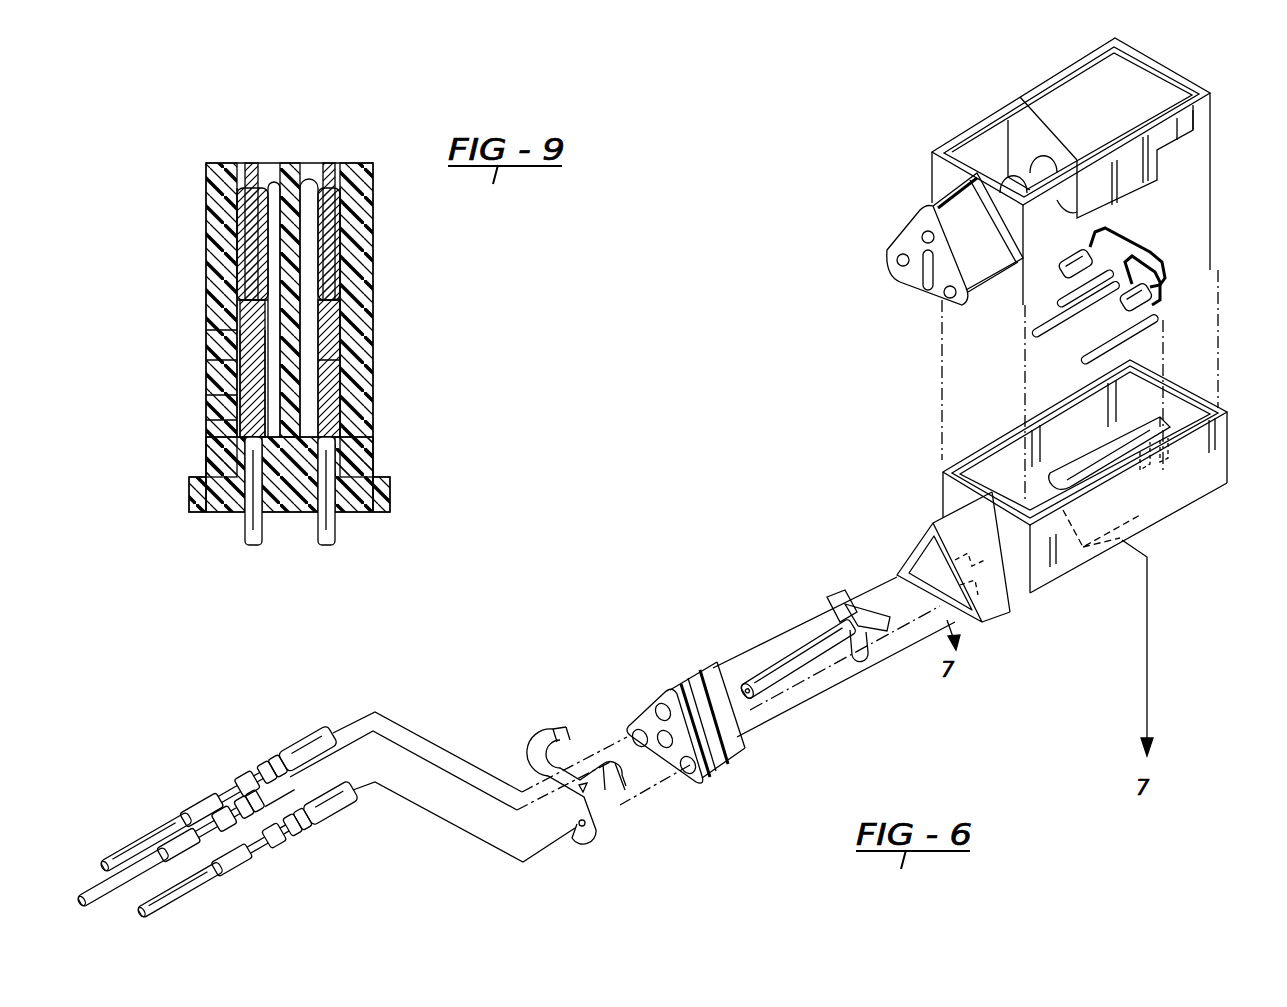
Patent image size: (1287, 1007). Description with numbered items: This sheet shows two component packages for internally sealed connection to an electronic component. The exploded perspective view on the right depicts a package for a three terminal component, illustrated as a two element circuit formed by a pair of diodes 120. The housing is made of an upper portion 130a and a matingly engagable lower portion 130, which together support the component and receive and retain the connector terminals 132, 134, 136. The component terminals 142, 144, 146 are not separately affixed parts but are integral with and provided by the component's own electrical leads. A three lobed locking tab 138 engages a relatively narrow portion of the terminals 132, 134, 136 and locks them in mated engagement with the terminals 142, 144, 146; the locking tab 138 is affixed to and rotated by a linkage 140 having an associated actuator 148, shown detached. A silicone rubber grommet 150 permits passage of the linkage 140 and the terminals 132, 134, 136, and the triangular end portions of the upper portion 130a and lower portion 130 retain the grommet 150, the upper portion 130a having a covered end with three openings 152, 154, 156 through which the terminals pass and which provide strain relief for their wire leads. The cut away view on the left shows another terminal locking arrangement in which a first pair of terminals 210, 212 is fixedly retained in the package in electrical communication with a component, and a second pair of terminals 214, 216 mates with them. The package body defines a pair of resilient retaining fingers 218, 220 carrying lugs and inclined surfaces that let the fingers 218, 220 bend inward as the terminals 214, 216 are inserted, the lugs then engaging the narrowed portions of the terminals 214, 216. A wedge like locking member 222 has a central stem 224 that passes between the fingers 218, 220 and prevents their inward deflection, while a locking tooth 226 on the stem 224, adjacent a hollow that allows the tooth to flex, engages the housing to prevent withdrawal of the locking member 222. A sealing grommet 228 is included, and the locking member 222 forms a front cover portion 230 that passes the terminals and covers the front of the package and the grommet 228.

In FIG. 6, the upper portion of the housing 130a is at (978, 125).
In FIG. 6, the lower housing half 130 is at (1225, 440).
In FIG. 6, the opening 152 is at (920, 235).
In FIG. 6, the opening 154 is at (897, 262).
In FIG. 6, the opening 156 is at (945, 300).
In FIG. 6, the diodes 120 is at (1082, 232).
In FIG. 6, the terminal 142 is at (1052, 305).
In FIG. 6, the terminal 144 is at (1047, 338).
In FIG. 6, the terminal 146 is at (1082, 362).
In FIG. 6, the locking tab 138 is at (840, 594).
In FIG. 6, the linkage 140 is at (766, 668).
In FIG. 6, the grommet 150 is at (742, 748).
In FIG. 6, the actuator 148 is at (635, 815).
In FIG. 6, the terminal 132 is at (307, 738).
In FIG. 6, the terminal 134 is at (305, 787).
In FIG. 6, the terminal 136 is at (318, 832).
In FIG. 9, the terminal 210 is at (240, 262).
In FIG. 9, the terminal 212 is at (330, 268).
In FIG. 9, the terminal 214 is at (216, 342).
In FIG. 9, the terminal 216 is at (357, 350).
In FIG. 9, the retaining finger 218 is at (240, 310).
In FIG. 9, the retaining finger 220 is at (317, 310).
In FIG. 9, the locking member 222 is at (393, 498).
In FIG. 9, the stem 224 is at (287, 513).
In FIG. 9, the locking tooth 226 is at (206, 397).
In FIG. 9, the sealing grommet 228 is at (374, 425).
In FIG. 9, the front cover portion 230 is at (210, 512).